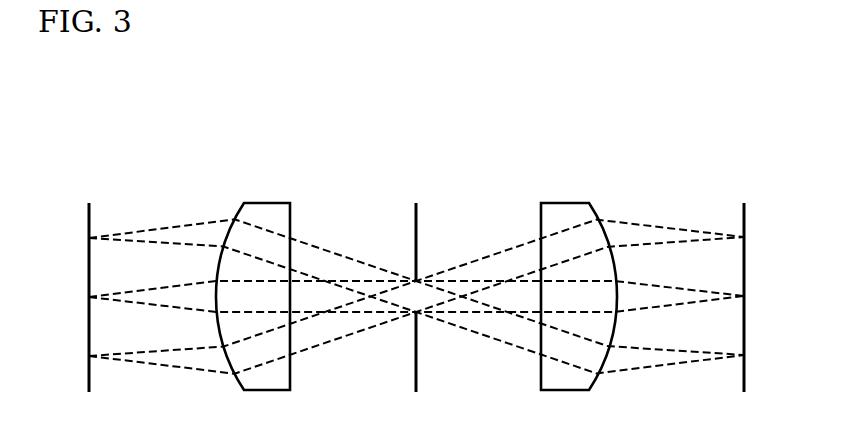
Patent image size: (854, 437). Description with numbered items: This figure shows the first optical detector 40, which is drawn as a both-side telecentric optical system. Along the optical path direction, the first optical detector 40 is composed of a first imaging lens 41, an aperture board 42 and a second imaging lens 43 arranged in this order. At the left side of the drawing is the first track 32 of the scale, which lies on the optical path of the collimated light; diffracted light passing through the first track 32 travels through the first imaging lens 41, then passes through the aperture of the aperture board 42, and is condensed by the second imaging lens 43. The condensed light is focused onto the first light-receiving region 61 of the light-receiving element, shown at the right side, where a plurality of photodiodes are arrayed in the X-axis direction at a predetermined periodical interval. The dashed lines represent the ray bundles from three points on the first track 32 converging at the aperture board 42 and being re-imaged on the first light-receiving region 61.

The first track 32 is at (89, 207).
The first optical detector 40 is at (243, 123).
The first imaging lens 41 is at (262, 203).
The aperture board 42 is at (416, 198).
The second imaging lens 43 is at (560, 203).
The first light-receiving region 61 is at (744, 207).